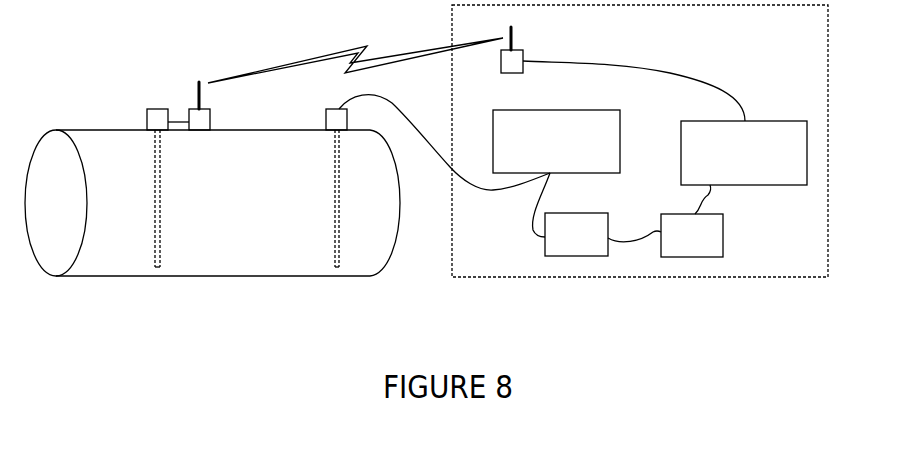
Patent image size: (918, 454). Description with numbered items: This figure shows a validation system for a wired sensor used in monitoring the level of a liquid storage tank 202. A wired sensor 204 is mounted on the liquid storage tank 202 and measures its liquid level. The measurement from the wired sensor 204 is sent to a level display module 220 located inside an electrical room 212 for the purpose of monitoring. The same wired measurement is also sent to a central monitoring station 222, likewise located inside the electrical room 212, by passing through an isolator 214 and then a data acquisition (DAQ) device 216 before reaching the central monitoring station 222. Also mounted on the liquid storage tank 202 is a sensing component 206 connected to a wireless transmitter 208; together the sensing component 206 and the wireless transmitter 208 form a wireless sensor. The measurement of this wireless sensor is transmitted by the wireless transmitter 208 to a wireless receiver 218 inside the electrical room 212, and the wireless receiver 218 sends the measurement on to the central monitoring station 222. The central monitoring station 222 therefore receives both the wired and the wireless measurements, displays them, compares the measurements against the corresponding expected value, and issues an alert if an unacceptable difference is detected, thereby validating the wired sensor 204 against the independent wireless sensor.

The liquid storage tank 202 is at (399, 190).
The wired sensor 204 is at (333, 109).
The sensing component 206 is at (153, 109).
The wireless transmitter 208 is at (206, 109).
The electrical room 212 is at (829, 77).
The isolator 214 is at (572, 213).
The data acquisition (DAQ) device 216 is at (723, 233).
The wireless receiver 218 is at (522, 50).
The level display module 220 is at (573, 110).
The central monitoring station 222 is at (760, 121).